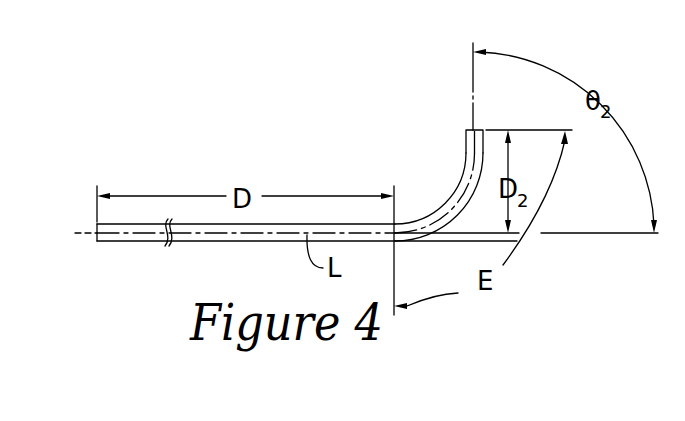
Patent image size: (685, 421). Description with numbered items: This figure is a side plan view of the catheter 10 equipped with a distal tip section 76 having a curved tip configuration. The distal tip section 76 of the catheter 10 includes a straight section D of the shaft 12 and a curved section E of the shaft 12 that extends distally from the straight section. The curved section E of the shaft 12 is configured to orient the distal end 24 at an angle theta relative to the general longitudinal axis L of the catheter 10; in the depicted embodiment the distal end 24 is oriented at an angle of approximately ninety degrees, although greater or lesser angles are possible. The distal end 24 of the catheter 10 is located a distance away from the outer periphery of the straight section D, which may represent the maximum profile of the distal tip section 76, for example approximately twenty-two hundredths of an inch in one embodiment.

The catheter 10 is at (228, 82).
The shaft 12 is at (237, 242).
The distal tip section 76 is at (296, 158).
The distal end 24 is at (472, 127).